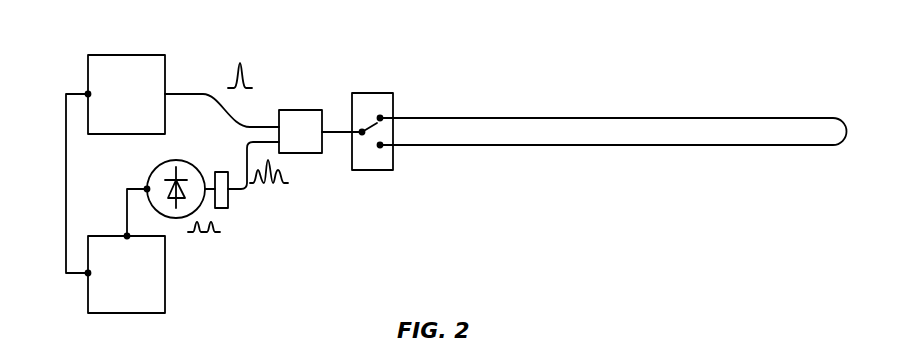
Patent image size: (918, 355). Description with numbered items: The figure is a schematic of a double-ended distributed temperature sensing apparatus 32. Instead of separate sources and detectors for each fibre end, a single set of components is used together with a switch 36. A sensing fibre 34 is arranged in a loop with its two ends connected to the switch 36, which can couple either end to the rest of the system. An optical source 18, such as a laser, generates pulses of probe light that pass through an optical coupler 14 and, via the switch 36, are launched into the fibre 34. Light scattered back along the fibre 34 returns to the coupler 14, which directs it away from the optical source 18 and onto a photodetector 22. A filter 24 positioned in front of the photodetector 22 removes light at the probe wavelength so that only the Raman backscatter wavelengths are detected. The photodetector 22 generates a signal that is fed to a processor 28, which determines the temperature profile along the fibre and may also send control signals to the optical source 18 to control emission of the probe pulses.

The optical source 18 is at (126, 94).
The optical coupler 14 is at (300, 131).
The processor 28 is at (126, 274).
The photodetector 22 is at (153, 167).
The filter 24 is at (228, 200).
The switch 36 is at (370, 170).
The fibre 34 is at (703, 118).
The double-ended apparatus 32 is at (595, 68).